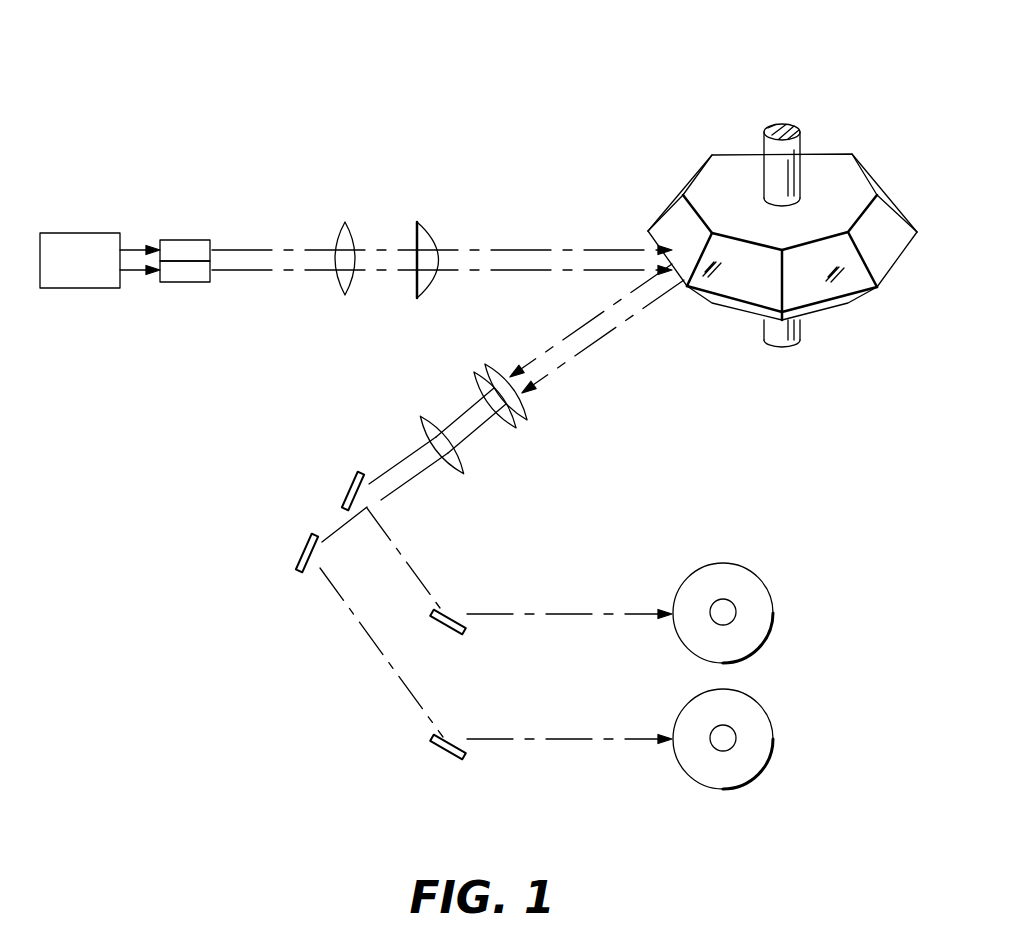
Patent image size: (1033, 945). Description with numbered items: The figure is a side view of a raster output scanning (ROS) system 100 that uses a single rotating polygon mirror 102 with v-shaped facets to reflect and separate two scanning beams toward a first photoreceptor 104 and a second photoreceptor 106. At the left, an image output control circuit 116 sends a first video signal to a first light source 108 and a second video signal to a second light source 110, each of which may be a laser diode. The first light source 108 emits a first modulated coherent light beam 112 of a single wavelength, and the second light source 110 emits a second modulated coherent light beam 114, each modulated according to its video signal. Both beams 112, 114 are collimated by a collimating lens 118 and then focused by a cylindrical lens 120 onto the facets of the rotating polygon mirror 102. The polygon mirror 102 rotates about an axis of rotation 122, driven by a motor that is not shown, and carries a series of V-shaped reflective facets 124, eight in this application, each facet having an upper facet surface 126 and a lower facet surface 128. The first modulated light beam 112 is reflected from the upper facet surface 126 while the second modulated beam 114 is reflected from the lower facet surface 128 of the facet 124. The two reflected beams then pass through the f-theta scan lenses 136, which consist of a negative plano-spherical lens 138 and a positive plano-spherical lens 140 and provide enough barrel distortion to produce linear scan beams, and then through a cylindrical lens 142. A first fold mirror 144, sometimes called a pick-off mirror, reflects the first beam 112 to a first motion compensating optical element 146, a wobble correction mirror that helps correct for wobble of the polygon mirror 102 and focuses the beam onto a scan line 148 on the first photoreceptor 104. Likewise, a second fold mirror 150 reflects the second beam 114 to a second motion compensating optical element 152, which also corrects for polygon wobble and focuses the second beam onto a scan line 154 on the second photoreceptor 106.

The raster output scanning (ROS) system 100 is at (300, 57).
The rotating polygon mirror 102 is at (777, 221).
The first photoreceptor 104 is at (731, 613).
The second photoreceptor 106 is at (731, 739).
The first light source 108 is at (187, 241).
The second light source 110 is at (197, 283).
The first modulated light beam 112 is at (327, 248).
The second modulated light beam 114 is at (325, 278).
The image output control circuit 116 is at (59, 276).
The collimating lens 118 is at (348, 233).
The cylindrical lens 120 is at (423, 294).
The axis of rotation 122 is at (763, 162).
The V-shaped reflective facet 124 is at (618, 232).
The upper facet surface 126 is at (673, 222).
The lower facet surface 128 is at (693, 290).
The f-theta scan lenses 136 is at (478, 393).
The negative plano-spherical lens 138 is at (506, 366).
The positive plano-spherical lens 140 is at (502, 424).
The cylindrical lens 142 is at (418, 430).
The first fold mirror 144 is at (351, 472).
The first motion compensating optical (MCO) element 146 is at (444, 631).
The scan line 148 is at (671, 615).
The second fold mirror 150 is at (307, 536).
The second motion compensating optical (MCO) element 152 is at (444, 755).
The scan line 154 is at (671, 740).